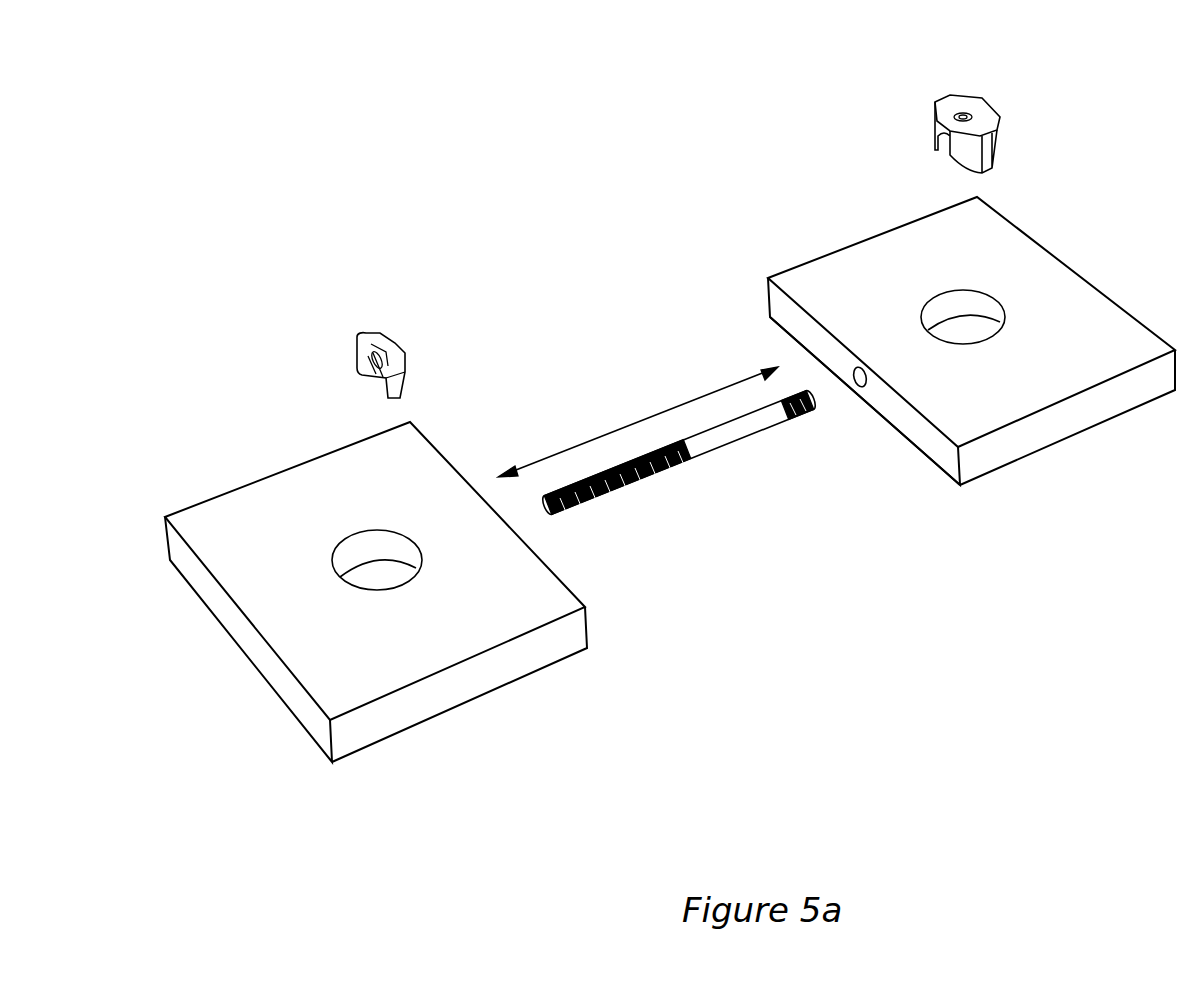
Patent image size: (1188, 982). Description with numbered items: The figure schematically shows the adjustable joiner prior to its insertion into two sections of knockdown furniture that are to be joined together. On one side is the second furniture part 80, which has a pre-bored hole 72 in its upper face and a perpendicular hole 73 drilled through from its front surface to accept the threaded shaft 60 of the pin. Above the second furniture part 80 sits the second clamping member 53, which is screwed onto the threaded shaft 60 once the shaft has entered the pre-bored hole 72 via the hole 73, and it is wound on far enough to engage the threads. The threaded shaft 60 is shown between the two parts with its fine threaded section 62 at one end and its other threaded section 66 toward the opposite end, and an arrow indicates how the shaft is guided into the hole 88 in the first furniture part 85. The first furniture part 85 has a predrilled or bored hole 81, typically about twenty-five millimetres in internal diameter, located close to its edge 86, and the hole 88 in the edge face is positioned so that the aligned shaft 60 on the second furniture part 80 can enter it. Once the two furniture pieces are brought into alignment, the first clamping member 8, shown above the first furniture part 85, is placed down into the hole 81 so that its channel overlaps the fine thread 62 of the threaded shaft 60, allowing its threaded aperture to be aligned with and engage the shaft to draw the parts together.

The first clamping member 8 is at (1004, 108).
The second clamping member 53 is at (377, 520).
The threaded shaft 60 is at (727, 447).
The fine threaded section 62 is at (797, 413).
The threaded portion of bolt 66 is at (610, 493).
The pre-bored hole 72 is at (337, 543).
The perpendicular hole 73 is at (417, 560).
The second furniture part 80 is at (368, 683).
The predrilled hole 81 is at (987, 313).
The first furniture part 85 is at (1052, 387).
The edge 86 is at (943, 438).
The hole 88 is at (852, 380).